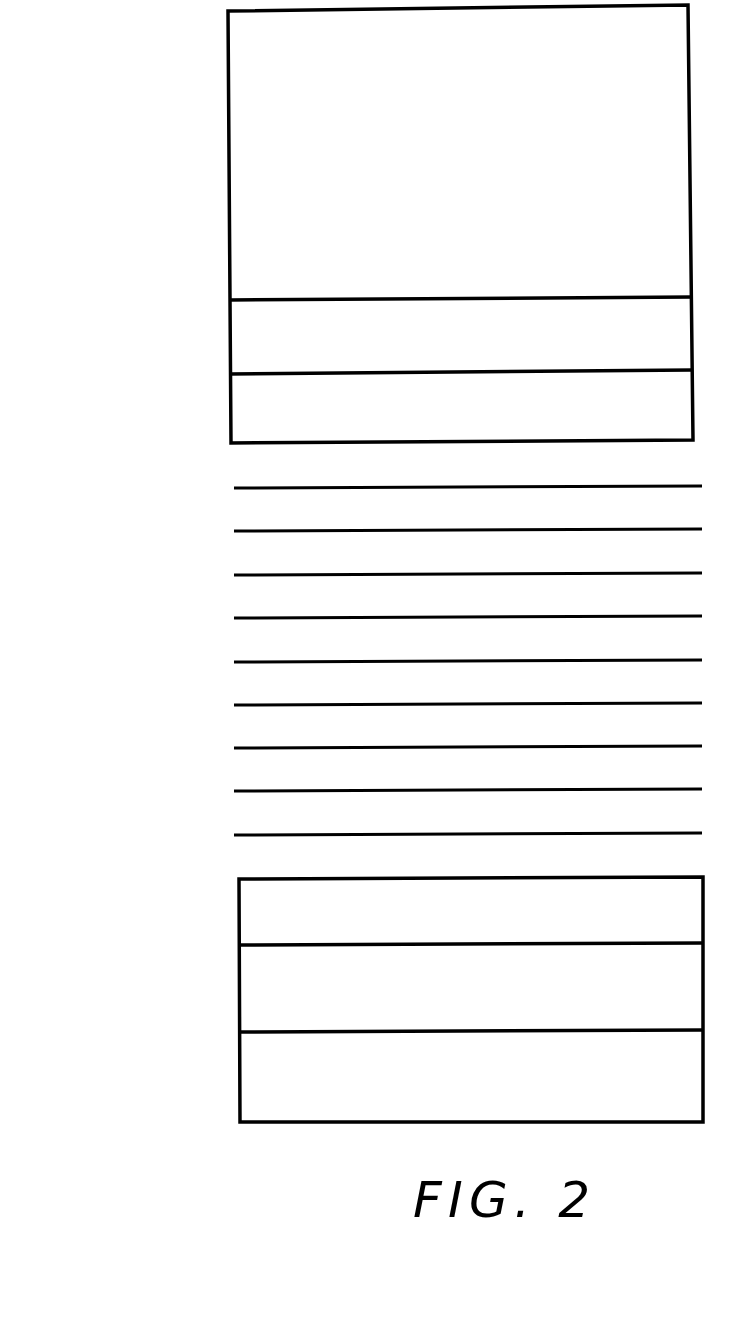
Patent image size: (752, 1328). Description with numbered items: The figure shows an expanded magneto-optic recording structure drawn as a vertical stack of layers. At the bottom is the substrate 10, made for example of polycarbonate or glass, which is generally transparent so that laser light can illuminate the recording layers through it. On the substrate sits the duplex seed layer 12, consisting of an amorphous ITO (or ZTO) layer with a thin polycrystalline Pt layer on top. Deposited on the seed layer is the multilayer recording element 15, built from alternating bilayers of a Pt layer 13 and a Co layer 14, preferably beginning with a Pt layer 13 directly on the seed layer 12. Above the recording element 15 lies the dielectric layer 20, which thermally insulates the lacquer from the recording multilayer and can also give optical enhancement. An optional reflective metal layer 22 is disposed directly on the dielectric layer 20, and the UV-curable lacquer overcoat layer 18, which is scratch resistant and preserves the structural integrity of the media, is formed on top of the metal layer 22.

The substrate 10 is at (240, 1073).
The duplex seed layer 12 is at (185, 964).
The Pt layer 13 is at (250, 860).
The Co layer 14 is at (248, 816).
The multilayer recording element 15 is at (373, 669).
The lacquer overcoat layer 18 is at (228, 245).
The dielectric layer 20 is at (230, 414).
The metal layer 22 is at (230, 341).